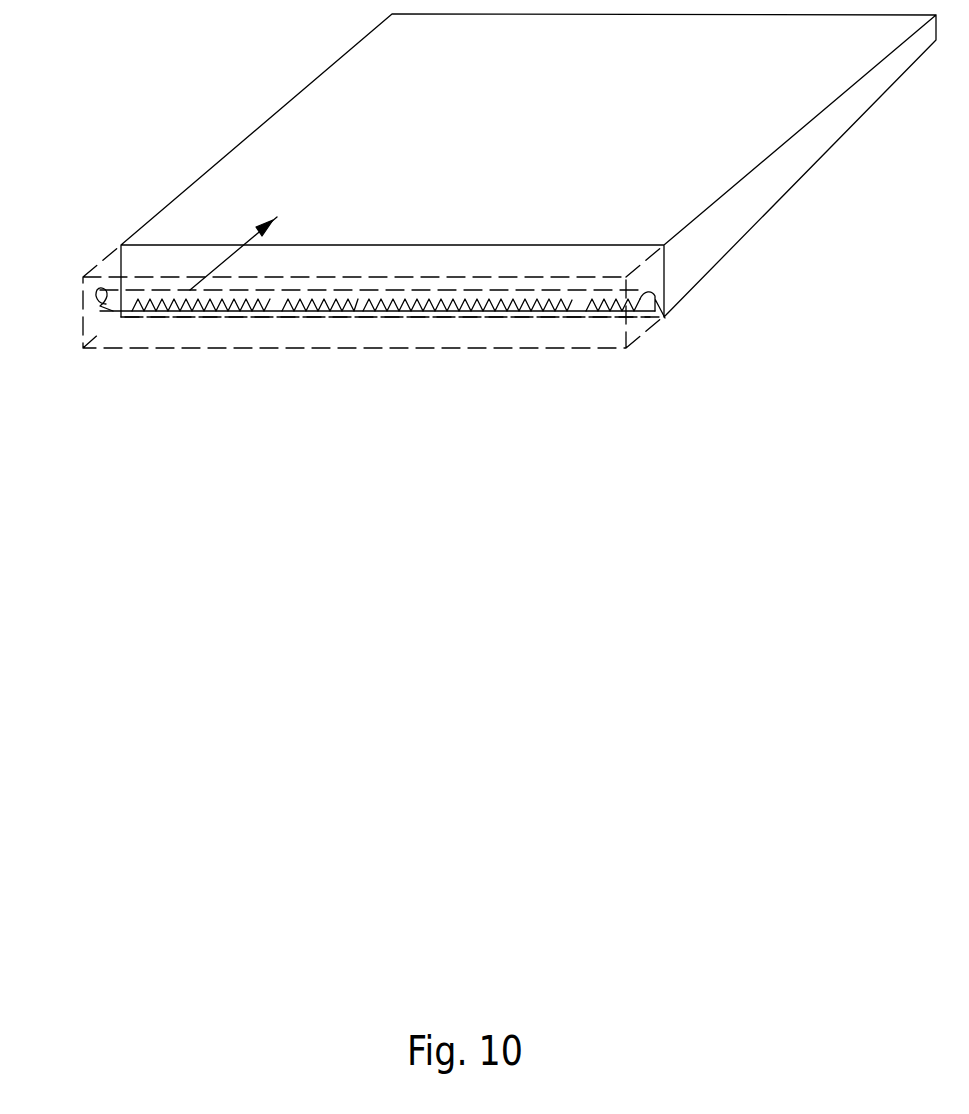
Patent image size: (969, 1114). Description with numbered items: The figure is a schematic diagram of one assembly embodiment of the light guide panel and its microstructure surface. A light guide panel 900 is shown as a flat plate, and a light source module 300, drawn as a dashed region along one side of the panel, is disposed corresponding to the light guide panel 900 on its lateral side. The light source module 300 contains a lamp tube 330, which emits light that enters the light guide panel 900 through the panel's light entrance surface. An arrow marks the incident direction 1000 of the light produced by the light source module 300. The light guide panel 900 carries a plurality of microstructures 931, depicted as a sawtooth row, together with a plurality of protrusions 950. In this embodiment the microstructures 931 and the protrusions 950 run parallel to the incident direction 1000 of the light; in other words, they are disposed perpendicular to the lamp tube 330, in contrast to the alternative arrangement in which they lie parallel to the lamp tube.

The light guide panel 900 is at (753, 198).
The light source module 300 is at (82, 290).
The lamp tube 330 is at (100, 305).
The microstructures 931 is at (403, 303).
The protrusions 950 is at (577, 303).
The incident direction 1000 is at (230, 258).